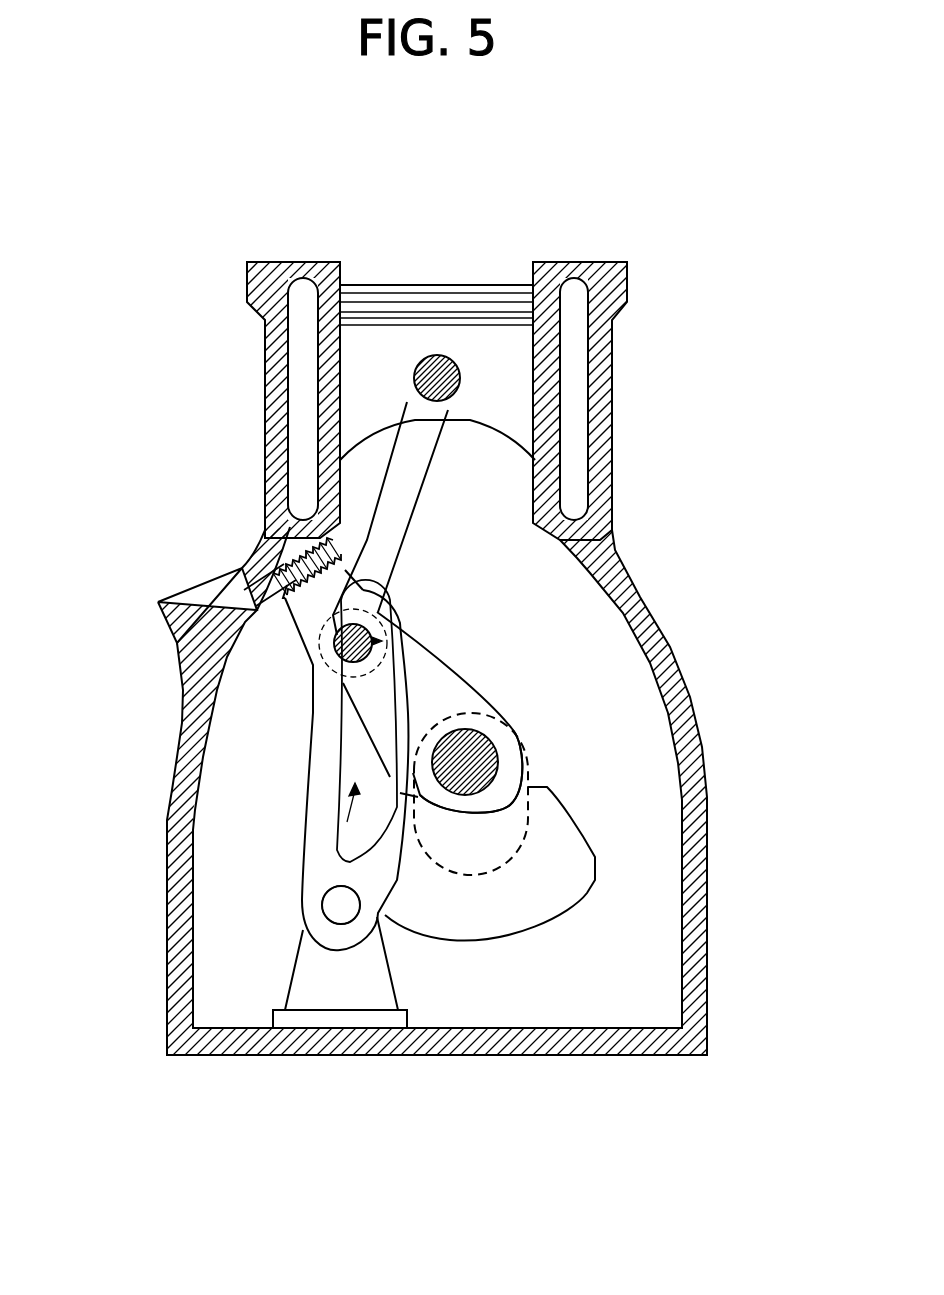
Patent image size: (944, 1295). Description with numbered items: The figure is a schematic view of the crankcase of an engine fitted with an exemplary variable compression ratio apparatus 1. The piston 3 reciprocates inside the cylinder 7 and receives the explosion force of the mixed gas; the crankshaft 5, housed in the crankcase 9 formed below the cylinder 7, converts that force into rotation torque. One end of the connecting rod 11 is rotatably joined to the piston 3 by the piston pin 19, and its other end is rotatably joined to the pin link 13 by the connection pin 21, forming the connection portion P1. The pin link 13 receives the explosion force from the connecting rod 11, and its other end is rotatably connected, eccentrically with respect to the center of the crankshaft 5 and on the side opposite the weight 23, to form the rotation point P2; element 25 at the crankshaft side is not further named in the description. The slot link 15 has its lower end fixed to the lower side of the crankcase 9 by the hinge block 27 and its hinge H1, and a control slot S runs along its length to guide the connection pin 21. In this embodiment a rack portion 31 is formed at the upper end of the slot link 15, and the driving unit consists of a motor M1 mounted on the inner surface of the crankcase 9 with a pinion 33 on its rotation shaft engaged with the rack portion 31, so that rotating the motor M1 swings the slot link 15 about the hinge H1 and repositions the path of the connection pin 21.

The variable compression ratio apparatus 1 is at (437, 572).
The piston 3 is at (503, 350).
The crankshaft 5 is at (530, 815).
The cylinder 7 is at (563, 385).
The crankcase 9 is at (687, 680).
The connecting rod 11 is at (392, 498).
The pin link 13 is at (443, 690).
The slot link 15 is at (318, 832).
The piston pin 19 is at (435, 355).
The connection pin 21 is at (377, 640).
The counterweight 23 is at (565, 882).
The link big end 25 is at (520, 733).
The hinge block 27 is at (380, 998).
The rack portion 31 is at (313, 523).
The pinion 33 is at (292, 548).
The motor M1 is at (192, 595).
The connection portion P1 is at (383, 640).
The rotation point P2 is at (474, 745).
The control slot S is at (347, 880).
The hinge H1 is at (343, 910).